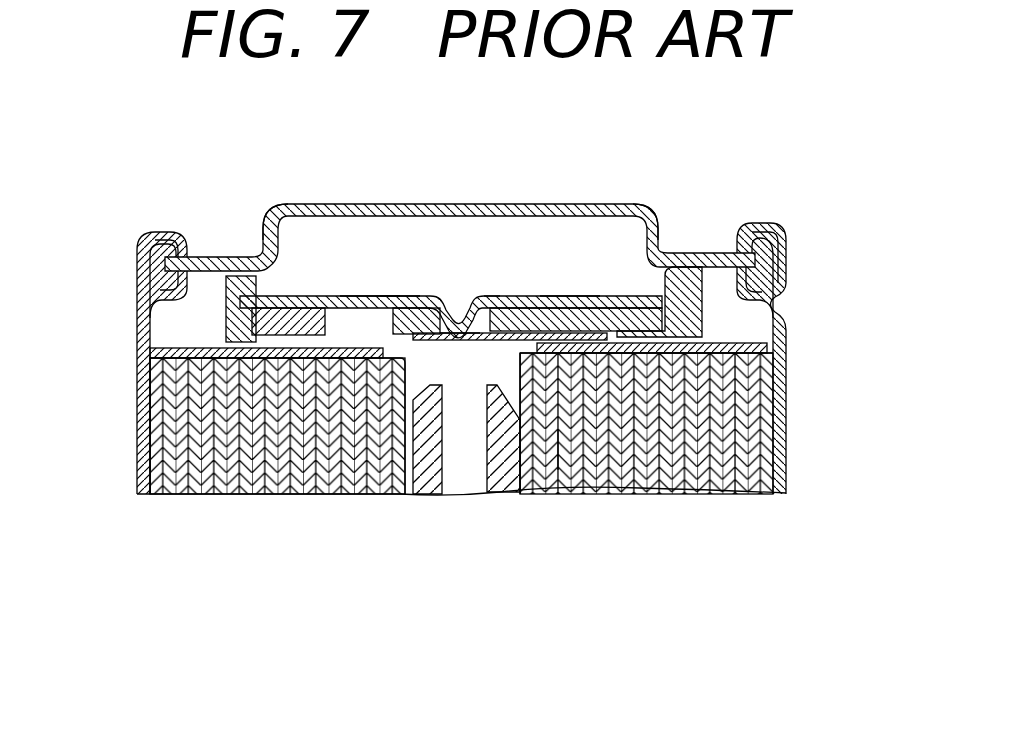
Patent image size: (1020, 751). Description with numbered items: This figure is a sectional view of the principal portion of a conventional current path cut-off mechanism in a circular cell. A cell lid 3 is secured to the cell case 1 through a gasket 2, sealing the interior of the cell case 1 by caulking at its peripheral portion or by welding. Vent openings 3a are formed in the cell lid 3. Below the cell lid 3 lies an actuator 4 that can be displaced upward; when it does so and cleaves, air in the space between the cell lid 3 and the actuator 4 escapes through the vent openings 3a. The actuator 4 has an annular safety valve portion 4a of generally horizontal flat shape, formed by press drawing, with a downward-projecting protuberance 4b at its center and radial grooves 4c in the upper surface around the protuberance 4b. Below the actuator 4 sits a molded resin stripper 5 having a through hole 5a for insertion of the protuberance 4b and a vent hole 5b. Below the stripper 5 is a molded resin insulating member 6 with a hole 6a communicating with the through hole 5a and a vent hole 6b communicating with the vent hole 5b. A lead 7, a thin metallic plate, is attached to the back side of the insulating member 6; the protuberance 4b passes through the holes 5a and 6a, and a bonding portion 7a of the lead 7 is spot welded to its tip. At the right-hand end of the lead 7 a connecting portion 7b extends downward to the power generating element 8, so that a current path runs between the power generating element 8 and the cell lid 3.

The cell case 1 is at (789, 428).
The gasket 2 is at (785, 248).
The cell lid 3 is at (623, 201).
The vent openings 3a is at (270, 208).
The actuator 4 is at (416, 296).
The safety valve portion 4a is at (543, 296).
The protuberance 4b is at (443, 330).
The radial grooves 4c is at (369, 300).
The stripper 5 is at (222, 318).
The through hole 5a is at (493, 296).
The vent hole 5b is at (396, 300).
The insulating member 6 is at (585, 305).
The hole 6a is at (470, 300).
The vent hole 6b is at (340, 328).
The lead 7 is at (507, 343).
The bonding portion 7a is at (458, 330).
The connecting portion 7b is at (563, 447).
The power generating element 8 is at (473, 420).